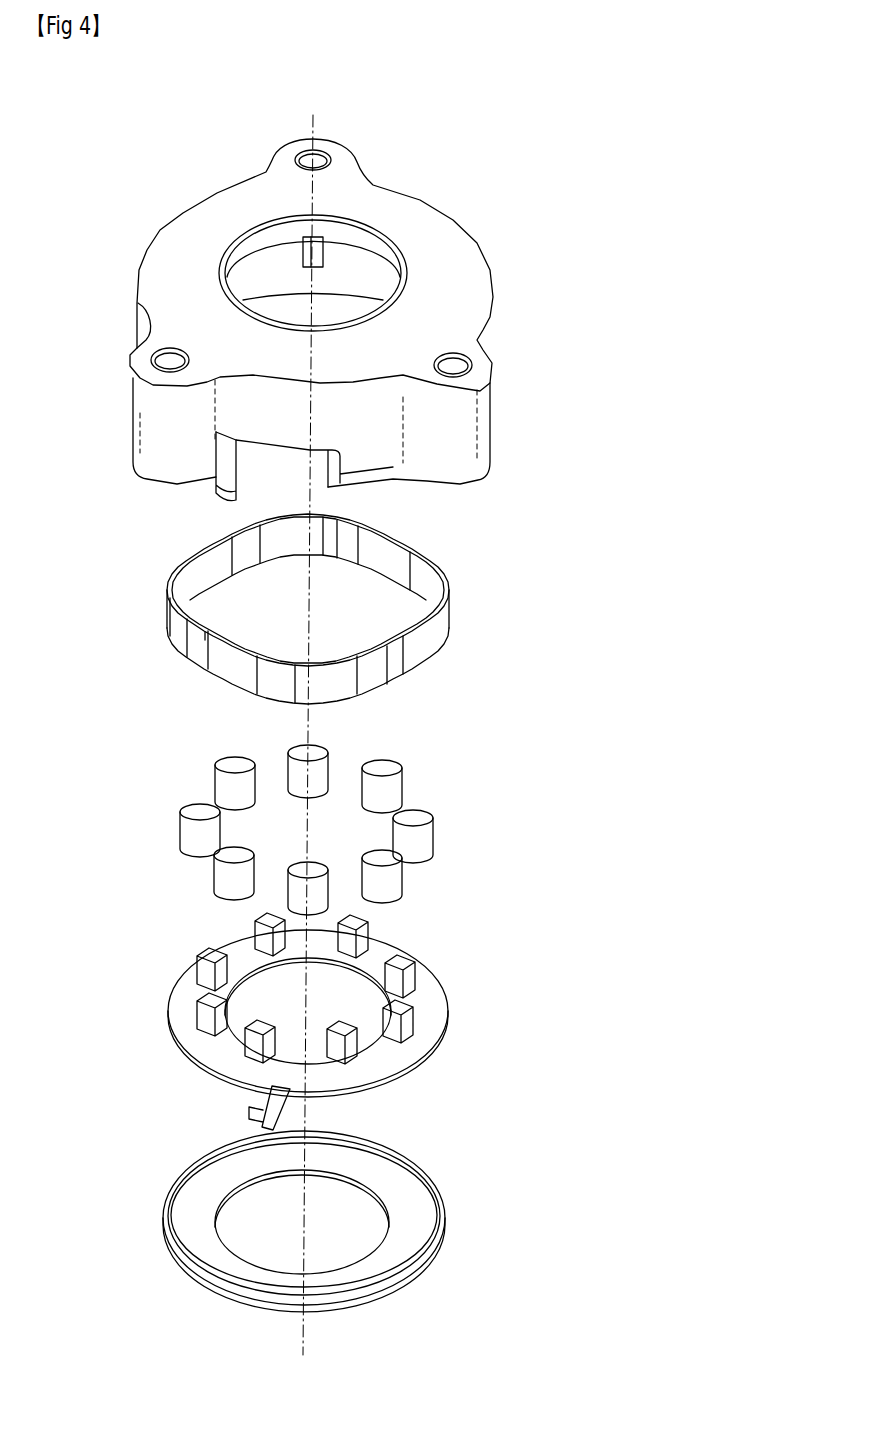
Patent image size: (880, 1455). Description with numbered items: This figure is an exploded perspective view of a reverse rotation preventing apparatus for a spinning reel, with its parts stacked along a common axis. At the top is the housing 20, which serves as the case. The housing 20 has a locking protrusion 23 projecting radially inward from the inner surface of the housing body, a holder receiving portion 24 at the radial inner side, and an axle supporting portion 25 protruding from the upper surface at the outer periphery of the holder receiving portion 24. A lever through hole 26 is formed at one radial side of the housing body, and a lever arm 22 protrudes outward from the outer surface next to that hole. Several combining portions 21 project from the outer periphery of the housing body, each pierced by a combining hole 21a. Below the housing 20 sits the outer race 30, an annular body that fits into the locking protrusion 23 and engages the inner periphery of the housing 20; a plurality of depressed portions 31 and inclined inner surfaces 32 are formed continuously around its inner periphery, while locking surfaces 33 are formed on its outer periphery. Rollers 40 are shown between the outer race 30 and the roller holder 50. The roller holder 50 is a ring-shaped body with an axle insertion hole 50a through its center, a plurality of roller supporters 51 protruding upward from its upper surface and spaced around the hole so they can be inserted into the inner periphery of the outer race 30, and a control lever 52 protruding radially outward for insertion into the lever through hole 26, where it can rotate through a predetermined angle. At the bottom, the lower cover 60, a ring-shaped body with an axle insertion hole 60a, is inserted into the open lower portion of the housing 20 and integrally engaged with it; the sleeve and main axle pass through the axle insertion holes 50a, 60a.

The housing 20 is at (522, 307).
The combining portion 21 is at (152, 428).
The mounting hole 21a is at (162, 360).
The lever arm 22 is at (220, 476).
The locking protrusion 23 is at (323, 253).
The holder receiving portion 24 is at (263, 280).
The axle supporting portion 25 is at (388, 243).
The lever through hole 26 is at (275, 463).
The outer race 30 is at (455, 572).
The depressed portion 31 is at (210, 640).
The inclined inner surface 32 is at (383, 548).
The locking surface 33 is at (380, 693).
The rollers 40 is at (387, 767).
The roller holder 50 is at (440, 920).
The axle insertion hole 50a is at (267, 1010).
The roller supporter 51 is at (203, 973).
The control lever 52 is at (255, 1107).
The lower cover 60 is at (437, 1155).
The axle insertion hole 60a is at (257, 1215).